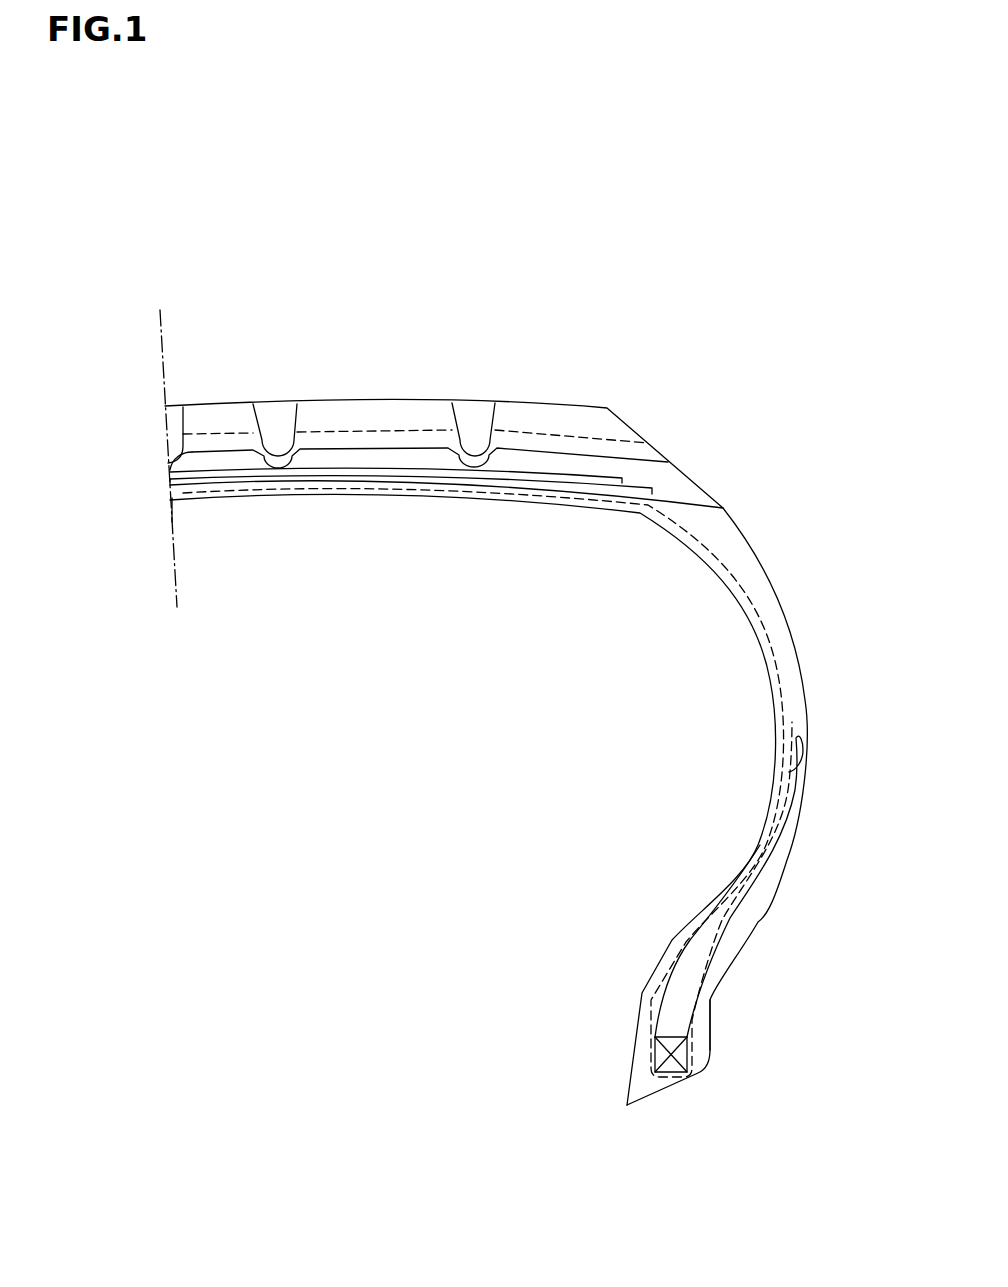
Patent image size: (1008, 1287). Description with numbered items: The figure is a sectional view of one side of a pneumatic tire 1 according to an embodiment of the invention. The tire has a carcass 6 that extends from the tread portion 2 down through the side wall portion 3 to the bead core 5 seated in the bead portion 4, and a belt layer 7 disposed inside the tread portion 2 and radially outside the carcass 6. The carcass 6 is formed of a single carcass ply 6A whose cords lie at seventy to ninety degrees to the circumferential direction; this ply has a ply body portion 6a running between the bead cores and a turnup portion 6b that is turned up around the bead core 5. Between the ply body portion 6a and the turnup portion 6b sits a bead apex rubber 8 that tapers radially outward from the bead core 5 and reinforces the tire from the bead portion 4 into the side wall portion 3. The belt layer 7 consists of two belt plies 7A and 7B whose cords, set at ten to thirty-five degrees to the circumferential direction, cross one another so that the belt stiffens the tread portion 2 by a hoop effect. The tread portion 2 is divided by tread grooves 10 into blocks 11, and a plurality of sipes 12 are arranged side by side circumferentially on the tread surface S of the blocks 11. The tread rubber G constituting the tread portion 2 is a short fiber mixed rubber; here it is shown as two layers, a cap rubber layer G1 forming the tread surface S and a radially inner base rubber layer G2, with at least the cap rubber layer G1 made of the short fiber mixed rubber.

The pneumatic tire 1 is at (750, 473).
The tread portion 2 is at (468, 380).
The side wall portion 3 is at (812, 658).
The bead portion 4 is at (575, 1065).
The bead core 5 is at (668, 1073).
The carcass 6 is at (493, 783).
The carcass ply 6A is at (493, 783).
The ply body portion 6a is at (780, 688).
The turnup portion 6b is at (792, 758).
The belt layer 7 is at (446, 589).
The belt ply 7A is at (310, 483).
The belt ply 7B is at (250, 476).
The bead apex rubber 8 is at (675, 1000).
The tread groove 10 is at (275, 402).
The block 11 is at (210, 393).
The sipe 12 is at (322, 405).
The tread surface S is at (423, 402).
The tread rubber G is at (477, 380).
The cap rubber layer G1 is at (607, 425).
The base rubber layer G2 is at (645, 470).